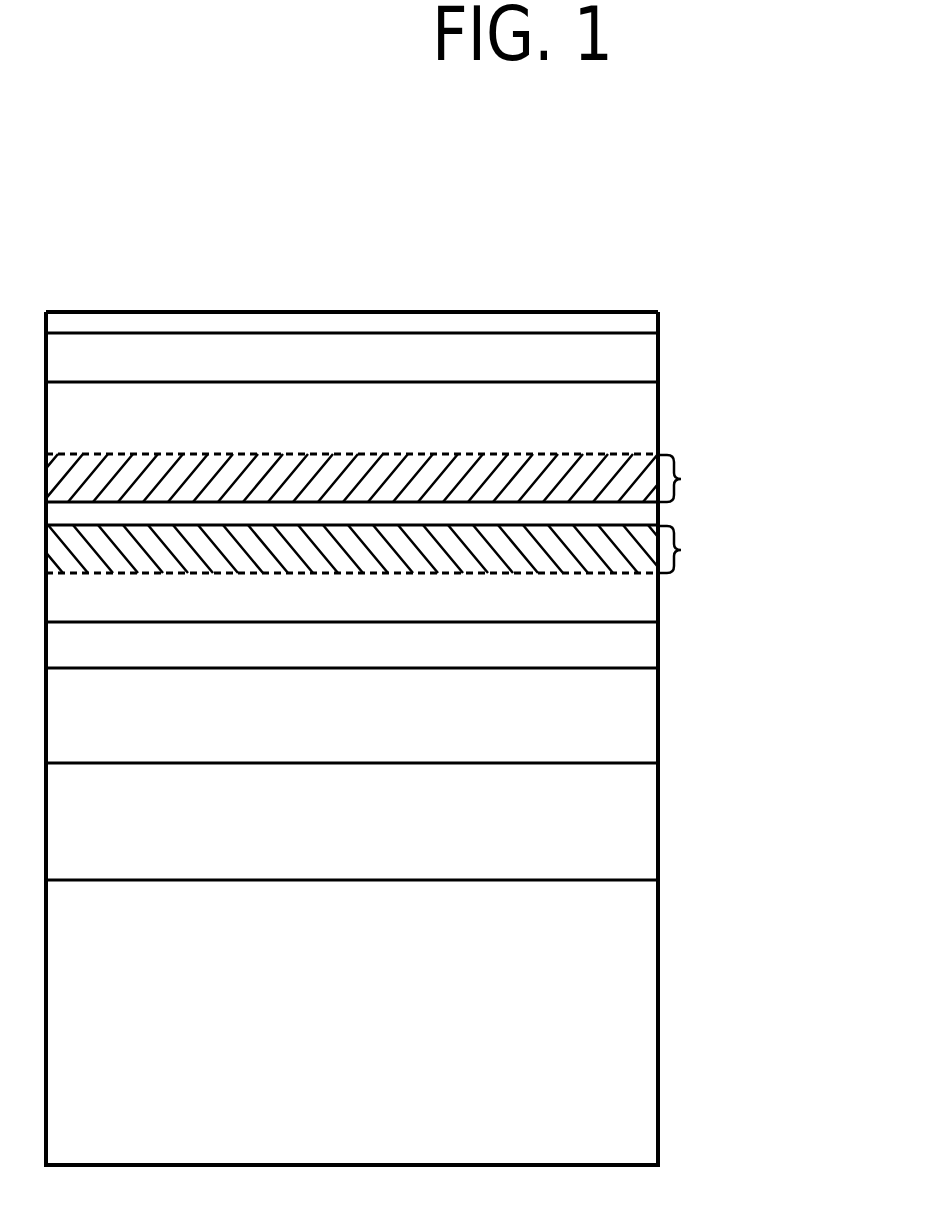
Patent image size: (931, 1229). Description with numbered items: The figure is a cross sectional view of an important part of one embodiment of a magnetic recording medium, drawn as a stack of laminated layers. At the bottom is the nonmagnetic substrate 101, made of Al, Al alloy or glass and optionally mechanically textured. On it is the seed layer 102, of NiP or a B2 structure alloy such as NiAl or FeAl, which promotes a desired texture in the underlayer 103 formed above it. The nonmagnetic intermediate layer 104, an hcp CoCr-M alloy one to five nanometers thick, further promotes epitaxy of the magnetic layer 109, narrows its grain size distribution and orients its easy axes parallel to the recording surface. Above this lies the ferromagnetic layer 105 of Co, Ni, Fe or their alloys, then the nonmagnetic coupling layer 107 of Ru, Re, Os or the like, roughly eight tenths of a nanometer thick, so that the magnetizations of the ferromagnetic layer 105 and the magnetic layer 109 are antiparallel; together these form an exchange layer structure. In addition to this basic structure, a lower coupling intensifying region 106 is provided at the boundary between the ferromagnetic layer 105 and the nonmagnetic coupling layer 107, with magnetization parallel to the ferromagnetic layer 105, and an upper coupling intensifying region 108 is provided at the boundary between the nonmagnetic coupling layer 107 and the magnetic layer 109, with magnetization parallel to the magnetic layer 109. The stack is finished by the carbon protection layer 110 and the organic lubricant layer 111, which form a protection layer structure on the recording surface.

The nonmagnetic substrate 101 is at (685, 1023).
The seed layer 102 is at (685, 823).
The underlayer 103 is at (685, 715).
The nonmagnetic intermediate layer 104 is at (685, 644).
The ferromagnetic layer 105 is at (685, 597).
The lower coupling intensifying region 106 is at (712, 550).
The nonmagnetic coupling layer 107 is at (685, 515).
The upper coupling intensifying region 108 is at (712, 479).
The magnetic layer 109 is at (685, 418).
The protection layer 110 is at (685, 360).
The lubricant layer 111 is at (685, 323).